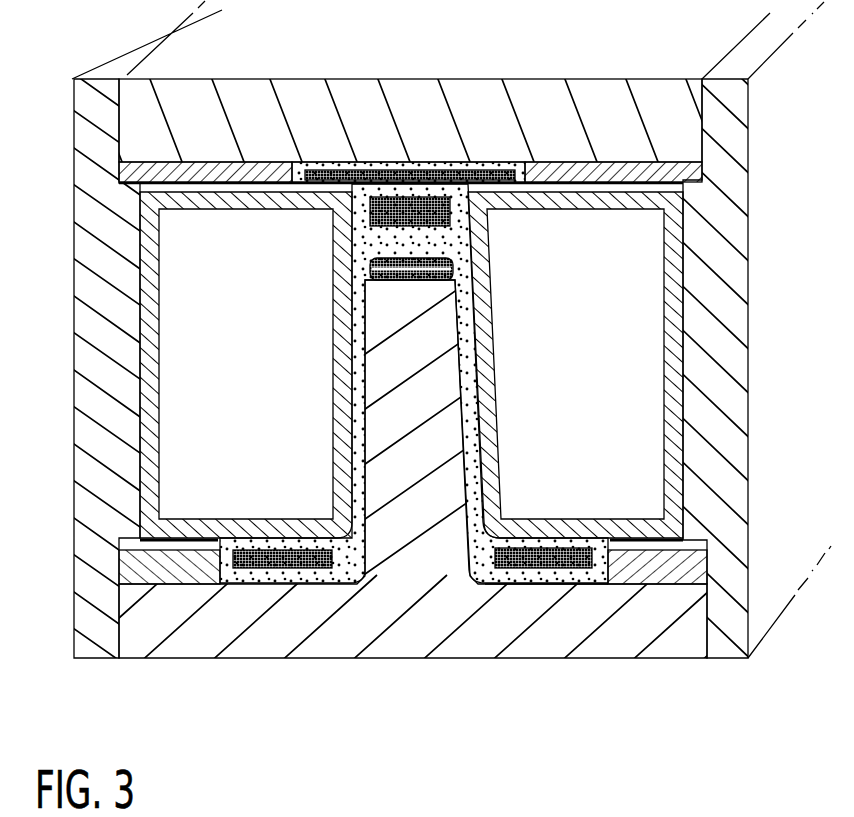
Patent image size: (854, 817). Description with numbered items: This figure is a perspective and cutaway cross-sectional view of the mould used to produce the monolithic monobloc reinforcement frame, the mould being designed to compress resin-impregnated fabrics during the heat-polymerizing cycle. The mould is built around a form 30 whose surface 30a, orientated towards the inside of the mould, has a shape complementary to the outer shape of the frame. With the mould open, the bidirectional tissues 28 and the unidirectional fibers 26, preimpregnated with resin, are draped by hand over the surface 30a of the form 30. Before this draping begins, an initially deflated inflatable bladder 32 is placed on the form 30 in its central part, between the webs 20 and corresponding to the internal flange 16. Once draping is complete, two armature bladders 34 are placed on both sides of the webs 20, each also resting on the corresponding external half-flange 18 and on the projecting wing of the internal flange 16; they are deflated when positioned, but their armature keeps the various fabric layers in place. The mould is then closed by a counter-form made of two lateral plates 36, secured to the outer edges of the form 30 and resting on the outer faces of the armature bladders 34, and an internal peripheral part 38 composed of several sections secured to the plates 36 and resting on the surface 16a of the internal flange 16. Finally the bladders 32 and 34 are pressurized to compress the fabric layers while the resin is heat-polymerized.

The internal flange 16 is at (328, 148).
The surface of the internal flange 16a is at (477, 160).
The external half-flange 18 is at (242, 596).
The webs 20 is at (448, 372).
The unidirectional fibers 26 is at (352, 215).
The bidirectional tissues 28 is at (463, 280).
The form 30 is at (325, 643).
The surface of the form 30a is at (548, 580).
The inflatable bladder 32 is at (413, 240).
The armature bladders 34 is at (484, 522).
The lateral plates 36 is at (93, 622).
The internal peripheral part 38 is at (597, 102).